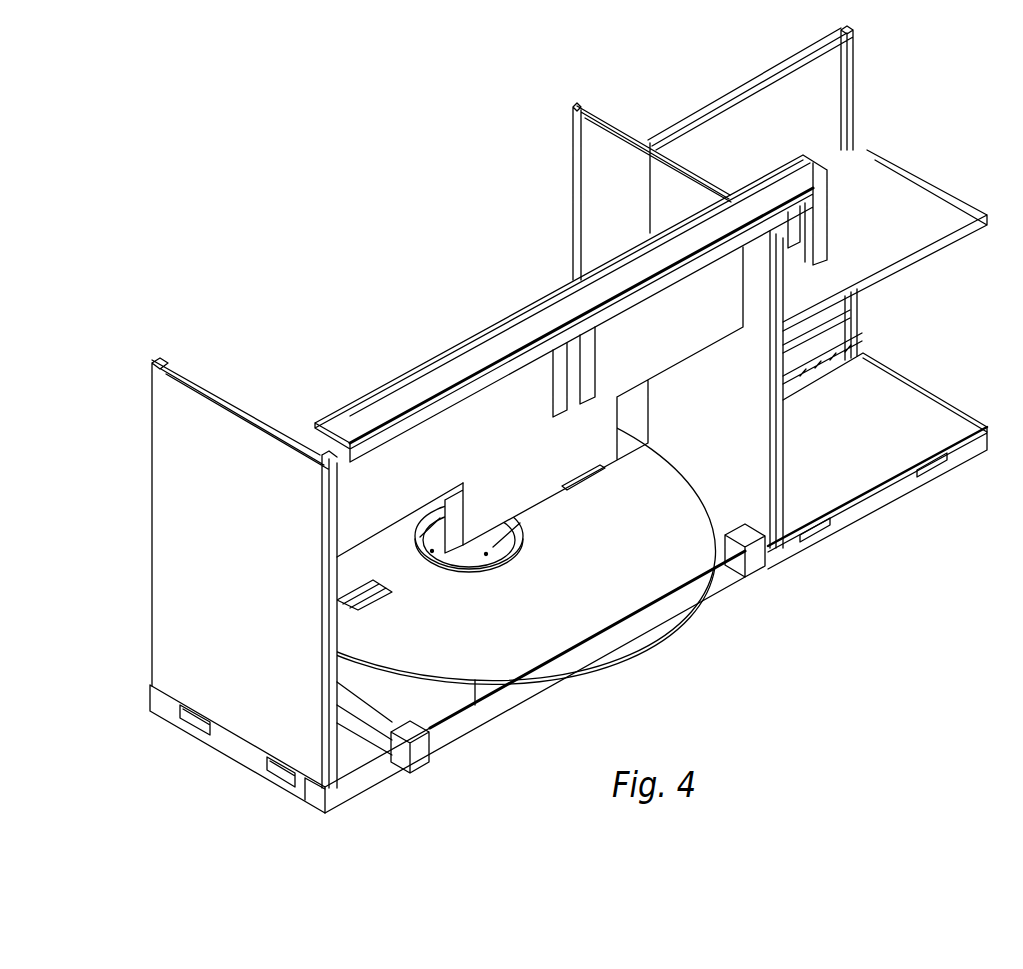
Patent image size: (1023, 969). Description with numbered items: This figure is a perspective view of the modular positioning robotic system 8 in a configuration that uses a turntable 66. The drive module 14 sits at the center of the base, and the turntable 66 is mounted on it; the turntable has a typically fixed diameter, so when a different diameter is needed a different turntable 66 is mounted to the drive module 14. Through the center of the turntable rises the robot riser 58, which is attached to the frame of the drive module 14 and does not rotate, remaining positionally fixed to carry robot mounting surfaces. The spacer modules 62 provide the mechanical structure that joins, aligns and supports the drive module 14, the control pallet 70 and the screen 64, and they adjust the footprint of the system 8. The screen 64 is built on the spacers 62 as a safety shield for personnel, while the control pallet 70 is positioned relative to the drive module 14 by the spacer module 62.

The modular positioning robotic system 8 is at (511, 484).
The drive module 14 is at (478, 713).
The robot riser 58 is at (477, 547).
The spacer module 62 is at (232, 746).
The screen 64 is at (168, 451).
The turntable 66 is at (566, 628).
The control pallet 70 is at (933, 403).